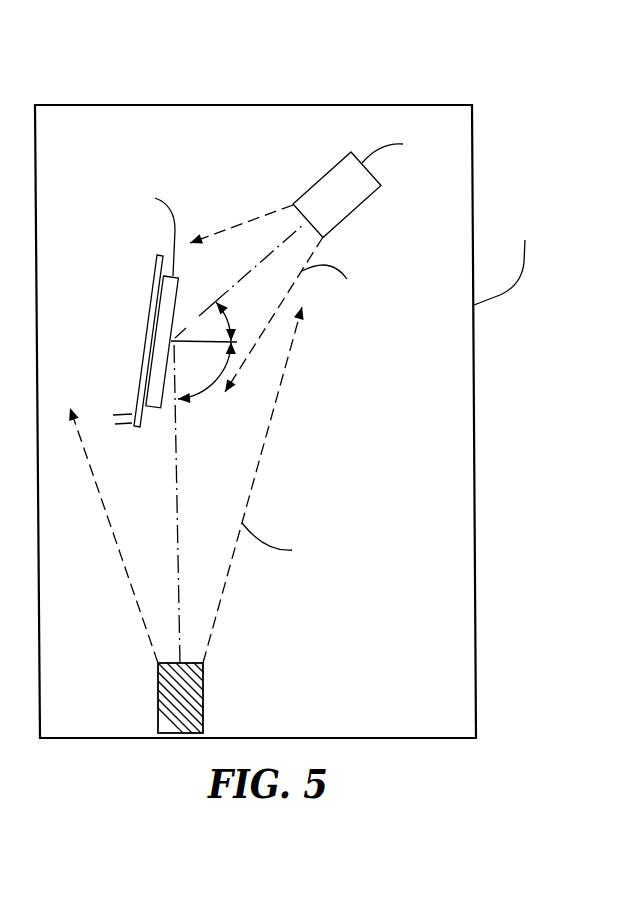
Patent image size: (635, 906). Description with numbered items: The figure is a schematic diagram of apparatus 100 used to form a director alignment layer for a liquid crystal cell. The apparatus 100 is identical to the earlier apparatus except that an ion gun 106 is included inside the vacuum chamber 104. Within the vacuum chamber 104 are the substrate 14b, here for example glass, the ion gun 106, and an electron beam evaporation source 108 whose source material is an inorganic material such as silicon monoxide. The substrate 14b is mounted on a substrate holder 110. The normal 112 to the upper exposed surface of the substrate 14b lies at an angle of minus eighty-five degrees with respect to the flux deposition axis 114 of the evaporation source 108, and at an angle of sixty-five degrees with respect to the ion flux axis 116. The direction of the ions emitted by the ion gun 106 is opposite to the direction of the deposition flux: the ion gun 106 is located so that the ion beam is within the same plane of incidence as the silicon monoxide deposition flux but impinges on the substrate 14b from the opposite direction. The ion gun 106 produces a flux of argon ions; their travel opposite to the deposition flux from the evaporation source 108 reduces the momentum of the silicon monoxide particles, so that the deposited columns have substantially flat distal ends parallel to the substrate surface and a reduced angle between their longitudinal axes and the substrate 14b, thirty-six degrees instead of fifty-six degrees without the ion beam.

The apparatus 100 is at (311, 400).
The vacuum chamber 104 is at (476, 618).
The ion gun 106 is at (317, 178).
The electron beam evaporation source 108 is at (203, 693).
The substrate holder 110 is at (155, 264).
The substrate 14b is at (180, 295).
The normal 112 is at (235, 342).
The flux deposition axis 114 is at (178, 562).
The ion flux axis 116 is at (267, 257).